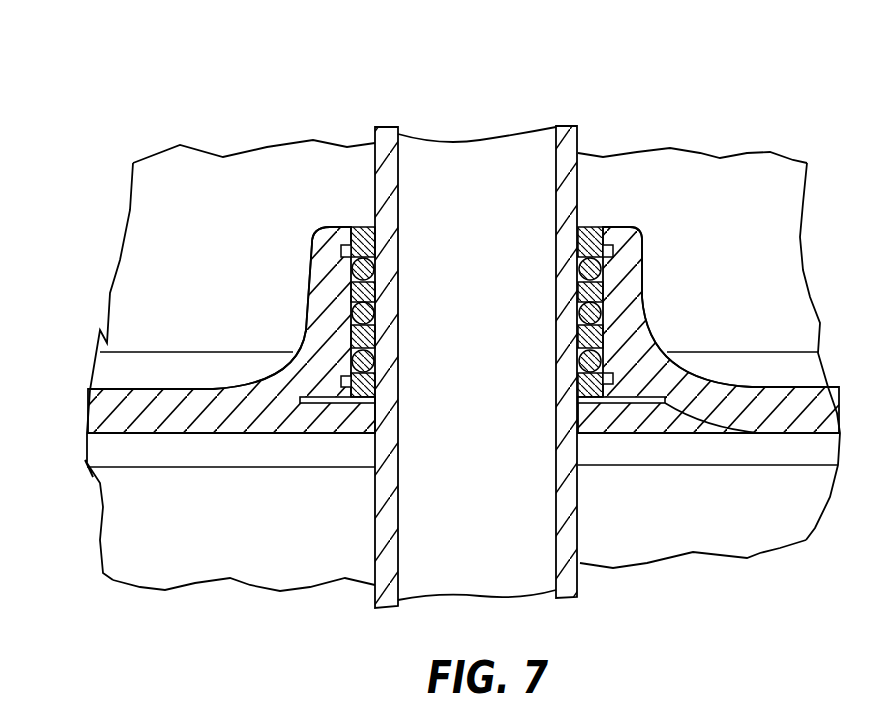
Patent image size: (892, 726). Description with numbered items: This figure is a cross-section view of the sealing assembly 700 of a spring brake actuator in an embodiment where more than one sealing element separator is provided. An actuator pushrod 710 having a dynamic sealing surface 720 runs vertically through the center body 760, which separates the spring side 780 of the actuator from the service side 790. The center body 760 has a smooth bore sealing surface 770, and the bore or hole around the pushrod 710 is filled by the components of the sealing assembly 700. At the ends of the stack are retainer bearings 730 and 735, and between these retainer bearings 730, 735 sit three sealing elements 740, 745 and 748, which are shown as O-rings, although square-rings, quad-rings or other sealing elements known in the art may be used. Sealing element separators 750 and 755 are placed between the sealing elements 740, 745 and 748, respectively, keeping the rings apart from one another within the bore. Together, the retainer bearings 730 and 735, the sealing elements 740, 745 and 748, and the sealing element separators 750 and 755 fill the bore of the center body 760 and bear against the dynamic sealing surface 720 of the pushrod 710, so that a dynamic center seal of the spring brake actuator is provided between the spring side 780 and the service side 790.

The sealing assembly 700 is at (328, 118).
The actuator pushrod 710 is at (418, 130).
The dynamic sealing surface 720 is at (578, 178).
The retainer bearing 730 is at (547, 281).
The retainer bearing 735 is at (592, 405).
The sealing element 740 is at (648, 237).
The sealing element 745 is at (612, 315).
The sealing element 748 is at (627, 350).
The sealing element separator 750 is at (612, 272).
The sealing element separator 755 is at (605, 352).
The center body 760 is at (752, 410).
The smooth bore sealing surface 770 is at (605, 405).
The spring side 780 is at (226, 291).
The service side 790 is at (229, 535).